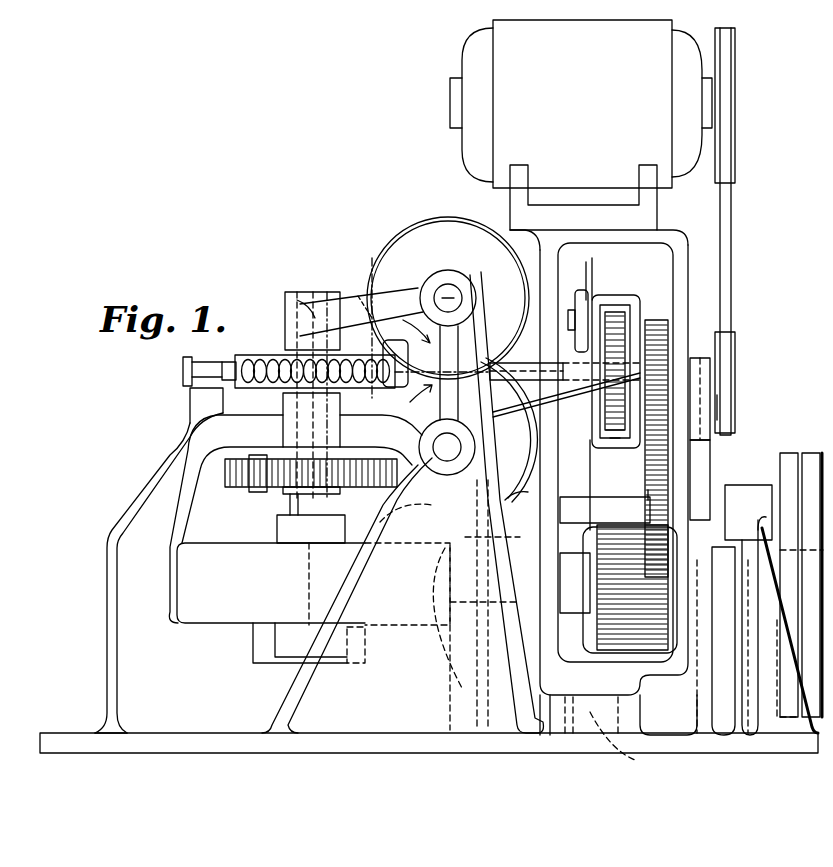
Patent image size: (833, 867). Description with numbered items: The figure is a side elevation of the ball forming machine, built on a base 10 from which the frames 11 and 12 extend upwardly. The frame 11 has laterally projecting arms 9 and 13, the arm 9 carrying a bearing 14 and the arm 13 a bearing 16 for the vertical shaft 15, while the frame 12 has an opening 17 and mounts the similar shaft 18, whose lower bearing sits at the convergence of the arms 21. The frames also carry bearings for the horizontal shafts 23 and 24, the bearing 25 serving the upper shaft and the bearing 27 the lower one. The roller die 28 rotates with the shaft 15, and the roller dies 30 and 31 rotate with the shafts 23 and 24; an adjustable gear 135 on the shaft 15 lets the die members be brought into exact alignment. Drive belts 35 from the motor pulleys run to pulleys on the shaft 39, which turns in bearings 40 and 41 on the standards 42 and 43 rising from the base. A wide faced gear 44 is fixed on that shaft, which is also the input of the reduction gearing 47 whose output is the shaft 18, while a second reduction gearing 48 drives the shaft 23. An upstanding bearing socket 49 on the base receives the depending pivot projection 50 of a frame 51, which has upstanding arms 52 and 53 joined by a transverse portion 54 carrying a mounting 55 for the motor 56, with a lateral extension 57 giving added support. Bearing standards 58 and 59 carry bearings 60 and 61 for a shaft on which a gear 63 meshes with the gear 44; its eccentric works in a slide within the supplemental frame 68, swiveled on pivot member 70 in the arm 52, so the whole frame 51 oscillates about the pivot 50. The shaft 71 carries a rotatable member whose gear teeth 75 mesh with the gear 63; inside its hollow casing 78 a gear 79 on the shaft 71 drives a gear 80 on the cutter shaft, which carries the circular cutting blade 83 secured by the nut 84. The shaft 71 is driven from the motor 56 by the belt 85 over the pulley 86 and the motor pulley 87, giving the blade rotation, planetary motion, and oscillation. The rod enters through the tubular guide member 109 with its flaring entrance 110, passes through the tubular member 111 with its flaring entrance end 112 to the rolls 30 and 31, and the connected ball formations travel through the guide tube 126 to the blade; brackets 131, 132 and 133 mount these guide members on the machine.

The laterally projecting arm 9 is at (392, 412).
The base 10 is at (87, 743).
The frame 11 is at (343, 582).
The frame 12 is at (142, 658).
The laterally projecting arm 13 is at (365, 290).
The bearing 14 is at (283, 403).
The vertical shaft 15 is at (300, 338).
The bearing 16 is at (288, 318).
The opening 17 is at (190, 528).
The shaft 18 is at (296, 505).
The arms 21 is at (143, 531).
The horizontal shaft 23 is at (460, 447).
The horizontal shaft 24 is at (450, 290).
The bearing 25 is at (428, 282).
The bearing 27 is at (430, 510).
The roll or roller die 28 is at (268, 355).
The roll or roller die 30 is at (475, 403).
The roll or roller die 31 is at (500, 272).
The drive belts 35 is at (808, 455).
The shaft 39 is at (452, 640).
The bearing 40 is at (716, 638).
The bearing 41 is at (572, 555).
The standard 42 is at (722, 707).
The standard 43 is at (525, 680).
The wide faced gear 44 is at (635, 545).
The reduction gearing 47 is at (177, 590).
The reduction gearing 48 is at (528, 305).
The upstanding bearing socket 49 is at (627, 720).
The depending pivot projection 50 is at (622, 742).
The frame 51 is at (585, 680).
The upstanding arm 52 is at (686, 298).
The upstanding arm 53 is at (562, 432).
The transverse portion 54 is at (660, 232).
The mounting 55 is at (577, 212).
The motor 56 is at (500, 50).
The lateral extension 57 is at (522, 232).
The bearing standard 58 is at (753, 697).
The bearing standard 59 is at (470, 660).
The bearing 60 is at (563, 503).
The bearing 61 is at (507, 500).
The gear 63 is at (652, 495).
The supplemental frame 68 is at (710, 450).
The pivot member 70 is at (722, 404).
The shaft 71 is at (702, 358).
The gear teeth 75 is at (656, 320).
The hollow casing 78 is at (625, 298).
The gear 79 is at (616, 438).
The gear 80 is at (615, 310).
The circular cutting blade 83 is at (583, 290).
The nut 84 is at (578, 292).
The belt 85 is at (723, 236).
The pulley 86 is at (735, 342).
The pulley 87 is at (738, 103).
The tubular guide member 109 is at (230, 362).
The flaring entrance 110 is at (183, 372).
The tubular member 111 is at (320, 300).
The flaring entrance end 112 is at (293, 300).
The guide tube 126 is at (520, 360).
The bracket 131 is at (192, 400).
The bracket 132 is at (363, 295).
The bracket 133 is at (565, 390).
The gear 135 is at (240, 473).